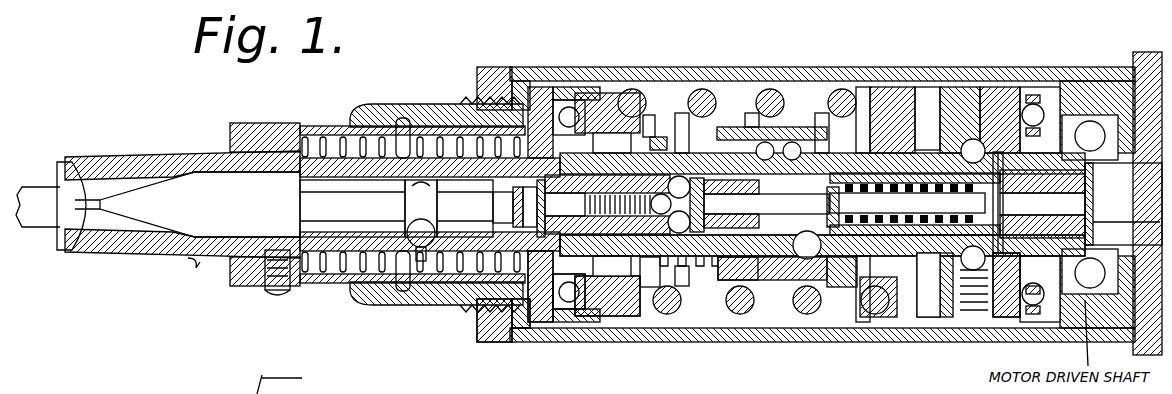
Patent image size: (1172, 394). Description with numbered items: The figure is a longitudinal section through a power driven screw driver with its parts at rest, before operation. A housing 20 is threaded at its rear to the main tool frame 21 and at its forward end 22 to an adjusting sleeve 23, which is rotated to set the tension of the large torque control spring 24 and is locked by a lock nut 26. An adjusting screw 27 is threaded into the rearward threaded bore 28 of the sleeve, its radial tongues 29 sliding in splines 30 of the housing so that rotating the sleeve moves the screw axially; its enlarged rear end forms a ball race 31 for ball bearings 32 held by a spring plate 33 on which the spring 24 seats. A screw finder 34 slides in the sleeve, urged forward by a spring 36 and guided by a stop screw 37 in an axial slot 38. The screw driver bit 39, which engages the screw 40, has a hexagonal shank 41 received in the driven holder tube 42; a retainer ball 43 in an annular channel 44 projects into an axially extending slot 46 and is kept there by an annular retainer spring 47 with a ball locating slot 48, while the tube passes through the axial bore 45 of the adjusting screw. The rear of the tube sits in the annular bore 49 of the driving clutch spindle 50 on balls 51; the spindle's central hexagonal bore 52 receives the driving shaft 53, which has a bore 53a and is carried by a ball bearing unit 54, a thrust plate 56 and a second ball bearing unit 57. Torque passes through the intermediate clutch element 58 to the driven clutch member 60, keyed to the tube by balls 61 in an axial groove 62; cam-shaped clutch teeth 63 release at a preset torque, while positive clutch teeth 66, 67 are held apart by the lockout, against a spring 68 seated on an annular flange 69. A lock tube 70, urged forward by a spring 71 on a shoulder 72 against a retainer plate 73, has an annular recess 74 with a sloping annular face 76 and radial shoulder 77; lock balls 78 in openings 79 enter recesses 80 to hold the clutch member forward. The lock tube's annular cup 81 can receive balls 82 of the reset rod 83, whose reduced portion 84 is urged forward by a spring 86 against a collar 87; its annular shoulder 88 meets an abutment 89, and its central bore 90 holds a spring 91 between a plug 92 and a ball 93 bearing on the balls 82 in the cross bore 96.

The housing 20 is at (696, 67).
The main tool frame 21 is at (1097, 95).
The forward end of housing 22 is at (512, 90).
The adjusting sleeve 23 is at (360, 110).
The spring 24 is at (645, 90).
The lock nut 26 is at (490, 68).
The adjusting screw 27 is at (425, 137).
The rearward threaded bore 28 is at (452, 104).
The radial tongues 29 is at (538, 87).
The splines 30 is at (573, 100).
The ball race 31 is at (552, 320).
The ball bearings 32 is at (575, 309).
The spring plate 33 is at (620, 316).
The screw finder 34 is at (150, 155).
The spring 36 is at (388, 126).
The stop screw 37 is at (280, 296).
The axial slot 38 is at (193, 268).
The screw driver bit 39 is at (218, 188).
The screw 40 is at (30, 188).
The hexagonal shank 41 is at (350, 213).
The driven holder tube 42 is at (556, 87).
The retainer ball 43 is at (390, 283).
The annular channel 44 is at (442, 213).
The axial bore 45 is at (600, 133).
The axially extending slot 46 is at (470, 305).
The annular retainer spring 47 is at (403, 118).
The ball locating slot 48 is at (420, 261).
The annular bore 49 is at (957, 115).
The driving clutch spindle 50 is at (992, 100).
The balls 51 is at (973, 139).
The central hexagonal bore 52 is at (1090, 175).
The driving shaft 53 is at (1087, 195).
The bore 53a is at (1093, 225).
The ball bearing unit 54 is at (1125, 67).
The thrust plate 56 is at (1050, 87).
The ball bearing unit 57 is at (1038, 300).
The intermediate clutch element 58 is at (900, 100).
The driven clutch member 60 is at (814, 150).
The balls 61 is at (790, 142).
The axial groove 62 is at (735, 127).
The cam-shaped clutch teeth 63 is at (928, 317).
The positive clutch teeth 66 is at (862, 322).
The positive clutch teeth 67 is at (840, 290).
The spring 68 is at (684, 113).
The annular flange 69 is at (655, 140).
The lock tube 70 is at (863, 87).
The spring 71 is at (928, 160).
The shoulder 72 is at (895, 317).
The retainer plate 73 is at (1000, 317).
The annular recess 74 is at (762, 281).
The inwardly sloping annular face 76 is at (759, 205).
The radial shoulder 77 is at (757, 282).
The lock balls 78 is at (790, 300).
The openings 79 is at (830, 228).
The recesses 80 is at (800, 260).
The annular cup 81 is at (722, 256).
The balls 82 is at (679, 204).
The reset rod 83 is at (652, 290).
The reduced portion 84 is at (980, 204).
The spring 86 is at (958, 312).
The collar 87 is at (840, 204).
The annular shoulder 88 is at (525, 328).
The abutment 89 is at (513, 340).
The central bore 90 is at (600, 151).
The spring 91 is at (600, 274).
The plug 92 is at (554, 213).
The ball 93 is at (661, 204).
The cross bore 96 is at (700, 268).